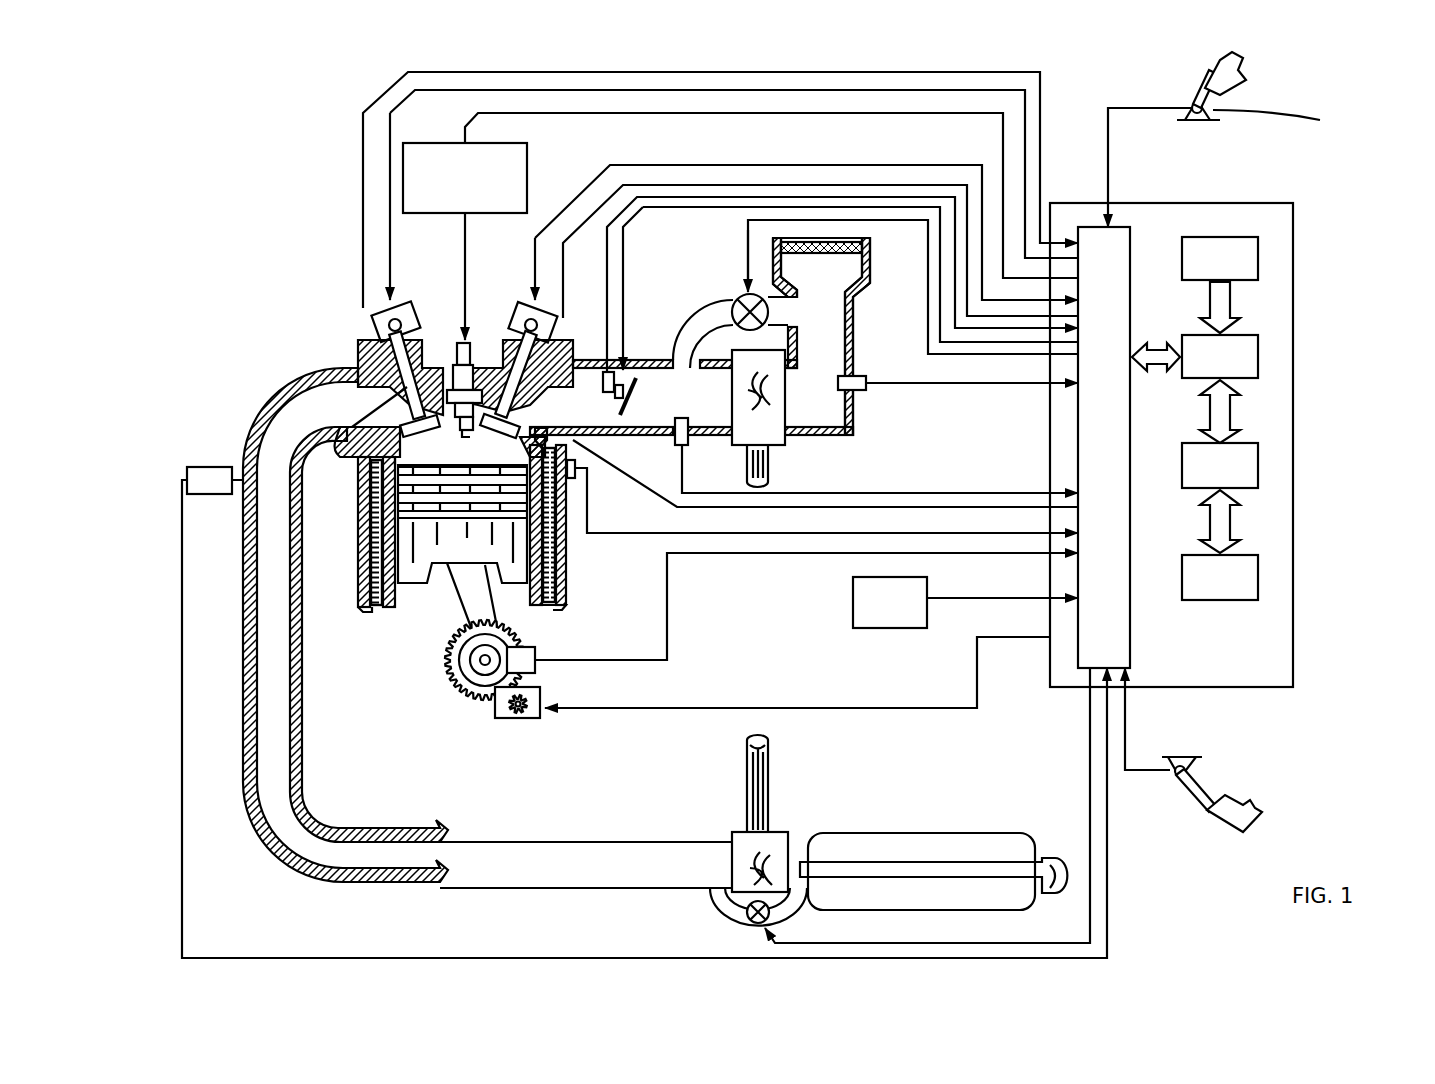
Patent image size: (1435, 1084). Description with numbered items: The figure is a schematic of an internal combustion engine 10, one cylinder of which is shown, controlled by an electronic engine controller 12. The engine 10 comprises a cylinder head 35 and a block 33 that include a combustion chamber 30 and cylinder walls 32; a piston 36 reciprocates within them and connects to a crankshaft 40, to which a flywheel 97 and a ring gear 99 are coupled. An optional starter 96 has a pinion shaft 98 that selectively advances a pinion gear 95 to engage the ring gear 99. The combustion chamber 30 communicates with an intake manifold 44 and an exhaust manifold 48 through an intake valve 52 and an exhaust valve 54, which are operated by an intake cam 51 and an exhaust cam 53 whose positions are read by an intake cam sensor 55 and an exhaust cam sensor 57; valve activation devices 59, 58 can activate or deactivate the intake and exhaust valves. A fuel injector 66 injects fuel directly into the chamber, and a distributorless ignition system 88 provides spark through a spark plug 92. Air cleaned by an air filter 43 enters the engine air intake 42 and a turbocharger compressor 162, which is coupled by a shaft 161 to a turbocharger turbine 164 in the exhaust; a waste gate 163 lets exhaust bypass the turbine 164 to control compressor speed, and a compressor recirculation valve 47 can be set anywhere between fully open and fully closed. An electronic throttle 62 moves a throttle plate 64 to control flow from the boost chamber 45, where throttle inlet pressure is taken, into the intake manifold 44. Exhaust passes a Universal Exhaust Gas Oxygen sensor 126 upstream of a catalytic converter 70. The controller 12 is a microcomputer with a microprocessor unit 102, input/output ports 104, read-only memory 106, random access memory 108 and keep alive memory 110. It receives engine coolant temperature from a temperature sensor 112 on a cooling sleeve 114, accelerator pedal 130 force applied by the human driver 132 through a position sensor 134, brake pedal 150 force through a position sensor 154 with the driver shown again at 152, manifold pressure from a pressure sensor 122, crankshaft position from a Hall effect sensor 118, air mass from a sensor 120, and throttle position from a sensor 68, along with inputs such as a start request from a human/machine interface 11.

The internal combustion engine 10 is at (283, 288).
The human/machine interface 11 is at (965, 602).
The electronic engine controller 12 is at (1282, 203).
The combustion chamber 30 is at (460, 447).
The cylinder walls 32 is at (403, 590).
The block 33 is at (348, 491).
The cylinder head 35 is at (344, 333).
The piston 36 is at (443, 556).
The crankshaft 40 is at (467, 692).
The engine air intake 42 is at (684, 264).
The air filter 43 is at (840, 256).
The intake manifold 44 is at (601, 411).
The boost chamber 45 is at (704, 411).
The compressor recirculation valve 47 is at (742, 296).
The exhaust manifold 48 is at (338, 416).
The intake cam 51 is at (537, 307).
The intake valve 52 is at (520, 410).
The exhaust cam 53 is at (407, 308).
The exhaust valve 54 is at (353, 380).
The intake cam sensor 55 is at (543, 323).
The exhaust cam sensor 57 is at (377, 315).
The valve activation device 58 is at (404, 322).
The valve activation device 59 is at (523, 325).
The electronic throttle 62 is at (628, 387).
The throttle plate 64 is at (624, 414).
The fuel injector 66 is at (553, 431).
The throttle position sensor 68 is at (605, 368).
The catalytic converter 70 is at (850, 833).
The distributorless ignition system 88 is at (418, 143).
The spark plug 92 is at (465, 340).
The pinion gear 95 is at (527, 722).
The starter 96 is at (533, 718).
The flywheel 97 is at (460, 655).
The pinion shaft 98 is at (517, 713).
The ring gear 99 is at (482, 702).
The microprocessor unit 102 is at (1258, 357).
The input/output ports 104 is at (1135, 235).
The read-only memory 106 is at (1258, 257).
The random access memory 108 is at (1258, 465).
The keep alive memory 110 is at (1258, 577).
The temperature sensor 112 is at (577, 478).
The cooling sleeve 114 is at (565, 553).
The Hall effect sensor 118 is at (535, 650).
The air mass sensor 120 is at (868, 378).
The pressure sensor 122 is at (675, 448).
The Universal Exhaust Gas Oxygen sensor 126 is at (187, 470).
The accelerator pedal 130 is at (1178, 85).
The human driver 132 is at (1236, 66).
The position sensor 134 is at (1287, 127).
The brake pedal 150 is at (1208, 815).
The foot 152 is at (1250, 797).
The position sensor 154 is at (1168, 767).
The shaft 161 is at (747, 466).
The turbocharger compressor 162 is at (773, 420).
The waste gate 163 is at (752, 925).
The turbocharger turbine 164 is at (737, 830).